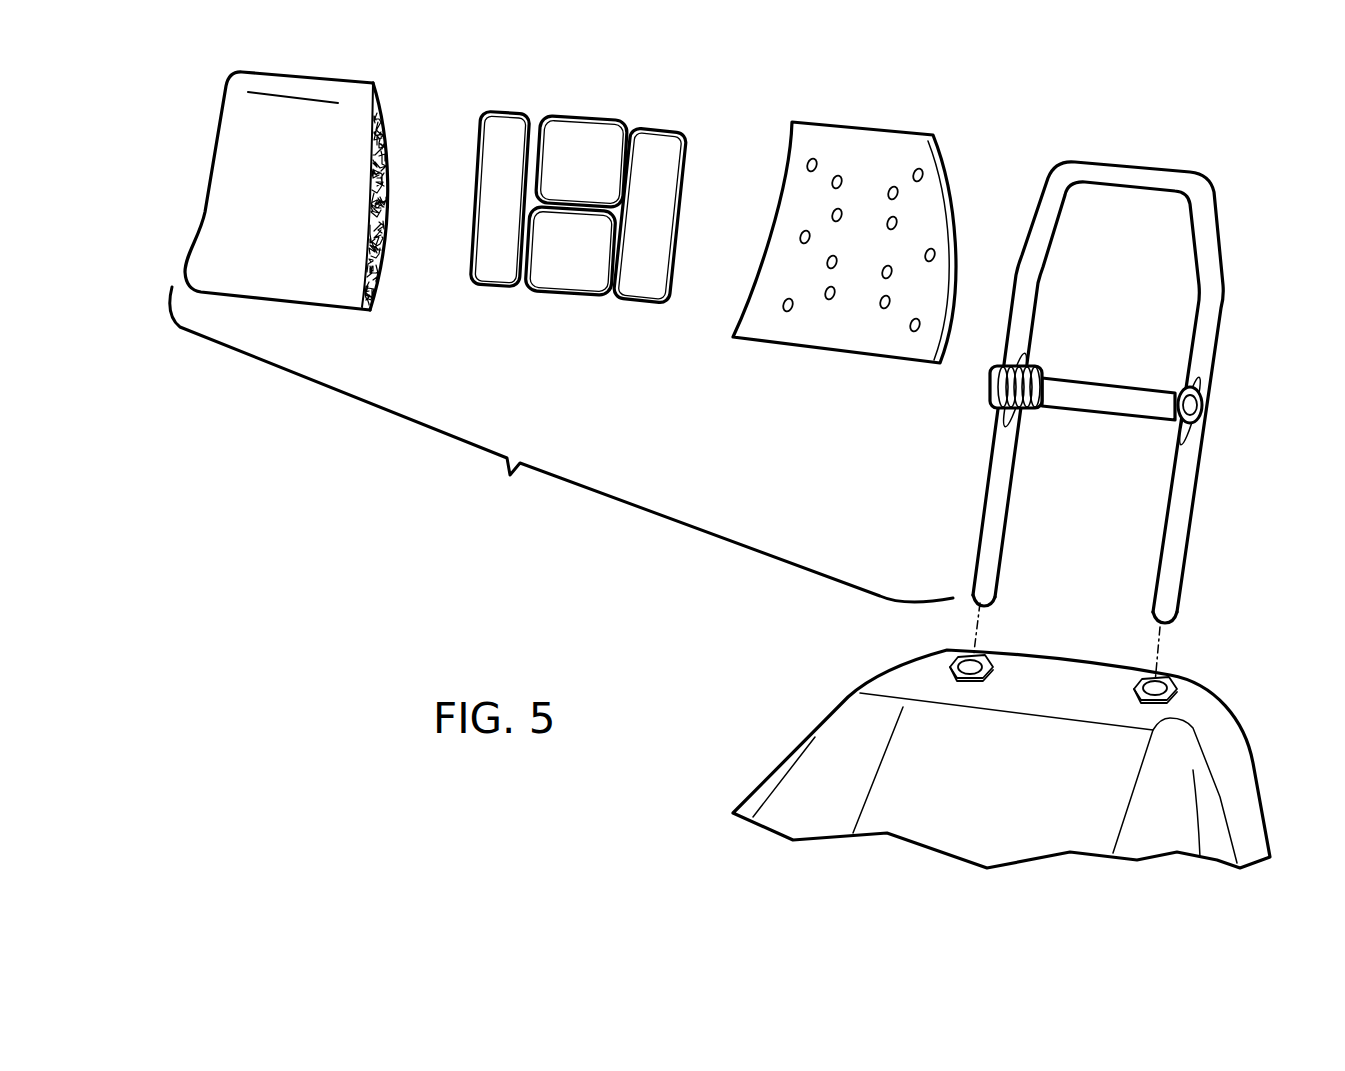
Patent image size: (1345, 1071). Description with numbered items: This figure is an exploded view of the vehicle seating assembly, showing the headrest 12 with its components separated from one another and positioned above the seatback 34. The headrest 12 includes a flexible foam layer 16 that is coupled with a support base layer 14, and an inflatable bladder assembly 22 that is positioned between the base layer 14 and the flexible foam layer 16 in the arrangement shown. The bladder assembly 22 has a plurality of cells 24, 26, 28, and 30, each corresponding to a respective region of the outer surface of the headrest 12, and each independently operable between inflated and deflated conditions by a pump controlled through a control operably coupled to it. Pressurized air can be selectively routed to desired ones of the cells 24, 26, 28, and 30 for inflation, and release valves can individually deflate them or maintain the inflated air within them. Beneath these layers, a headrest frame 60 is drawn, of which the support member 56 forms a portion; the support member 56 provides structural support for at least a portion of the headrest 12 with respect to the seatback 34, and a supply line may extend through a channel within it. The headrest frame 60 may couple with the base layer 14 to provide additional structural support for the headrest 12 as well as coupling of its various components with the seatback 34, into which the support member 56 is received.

The headrest 12 is at (561, 444).
The support base layer 14 is at (907, 145).
The flexible foam layer 16 is at (373, 113).
The inflatable bladder assembly 22 is at (589, 184).
The cell 24 is at (581, 161).
The cell 26 is at (570, 250).
The cell 28 is at (499, 199).
The cell 30 is at (650, 216).
The seatback 34 is at (1243, 767).
The support member 56 is at (990, 532).
The headrest frame 60 is at (1113, 422).